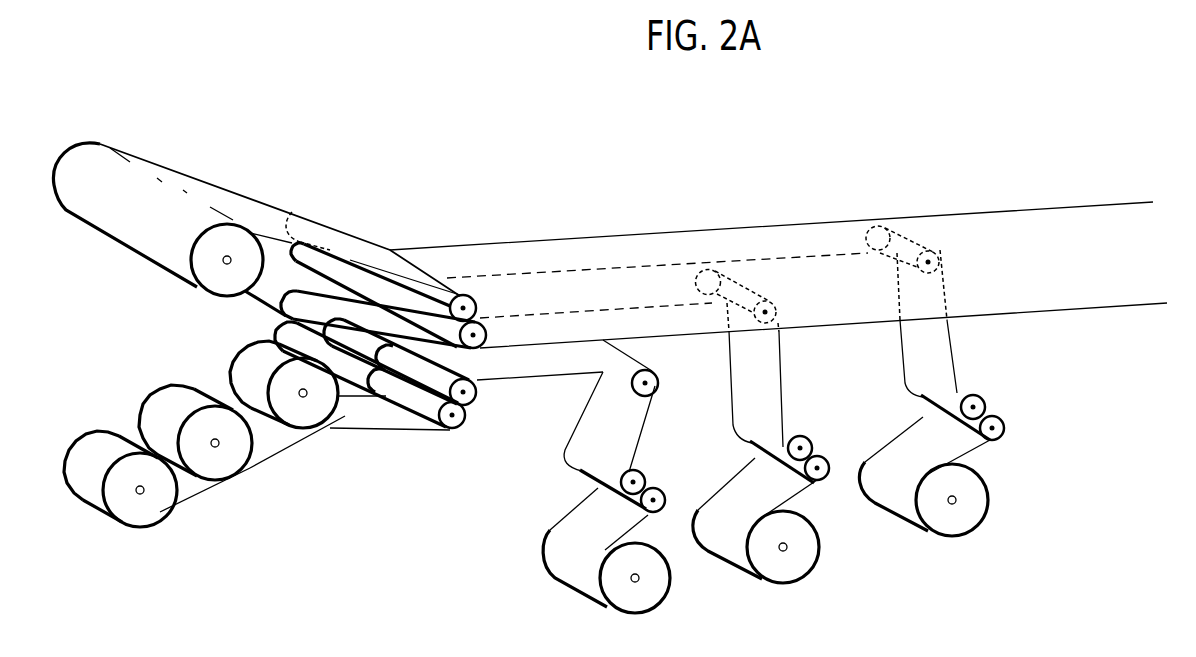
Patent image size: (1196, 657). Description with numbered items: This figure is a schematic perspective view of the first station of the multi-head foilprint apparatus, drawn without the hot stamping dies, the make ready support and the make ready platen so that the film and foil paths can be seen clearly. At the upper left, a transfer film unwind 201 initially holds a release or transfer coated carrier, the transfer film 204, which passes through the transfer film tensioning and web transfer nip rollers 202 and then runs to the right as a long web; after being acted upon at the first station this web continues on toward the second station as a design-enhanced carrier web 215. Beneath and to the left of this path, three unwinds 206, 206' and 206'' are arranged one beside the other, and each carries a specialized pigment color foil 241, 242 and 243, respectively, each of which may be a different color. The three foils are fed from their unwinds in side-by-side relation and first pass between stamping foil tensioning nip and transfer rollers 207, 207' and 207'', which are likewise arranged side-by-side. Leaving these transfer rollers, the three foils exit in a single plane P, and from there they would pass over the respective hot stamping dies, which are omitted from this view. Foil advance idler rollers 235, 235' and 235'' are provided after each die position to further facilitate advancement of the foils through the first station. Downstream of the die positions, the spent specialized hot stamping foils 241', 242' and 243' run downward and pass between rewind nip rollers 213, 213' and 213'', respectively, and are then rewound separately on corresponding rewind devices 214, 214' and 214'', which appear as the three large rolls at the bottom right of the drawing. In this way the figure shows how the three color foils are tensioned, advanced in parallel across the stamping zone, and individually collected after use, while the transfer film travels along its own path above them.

The transfer film unwind 201 is at (207, 278).
The transfer film tensioning and web transfer nip rollers 202 is at (460, 297).
The transfer film 204 is at (243, 197).
The unwind 206 is at (295, 414).
The unwind 206' is at (210, 457).
The unwind 206'' is at (120, 502).
The stamping foil tensioning nip and transfer rollers 207 is at (418, 396).
The stamping foil tensioning nip and transfer rollers 207' is at (326, 328).
The stamping foil tensioning nip and transfer rollers 207'' is at (344, 362).
The rewind nip rollers 213 is at (640, 478).
The rewind nip rollers 213' is at (808, 443).
The rewind nip rollers 213'' is at (992, 410).
The rewind device 214 is at (606, 572).
The rewind device 214' is at (756, 548).
The rewind device 214'' is at (924, 505).
The design-enhanced carrier web 215 is at (1057, 230).
The foil advance idler roller 235 is at (658, 368).
The foil advance idler roller 235' is at (728, 260).
The foil advance idler roller 235'' is at (901, 247).
The specialized pigment color foil 241 is at (390, 442).
The spent specialized hot stamping foil 241' is at (637, 422).
The specialized pigment color foil 242 is at (297, 466).
The spent specialized hot stamping foil 242' is at (789, 389).
The specialized pigment color foil 243 is at (205, 508).
The spent specialized hot stamping foil 243' is at (956, 358).
The single plane P is at (533, 373).